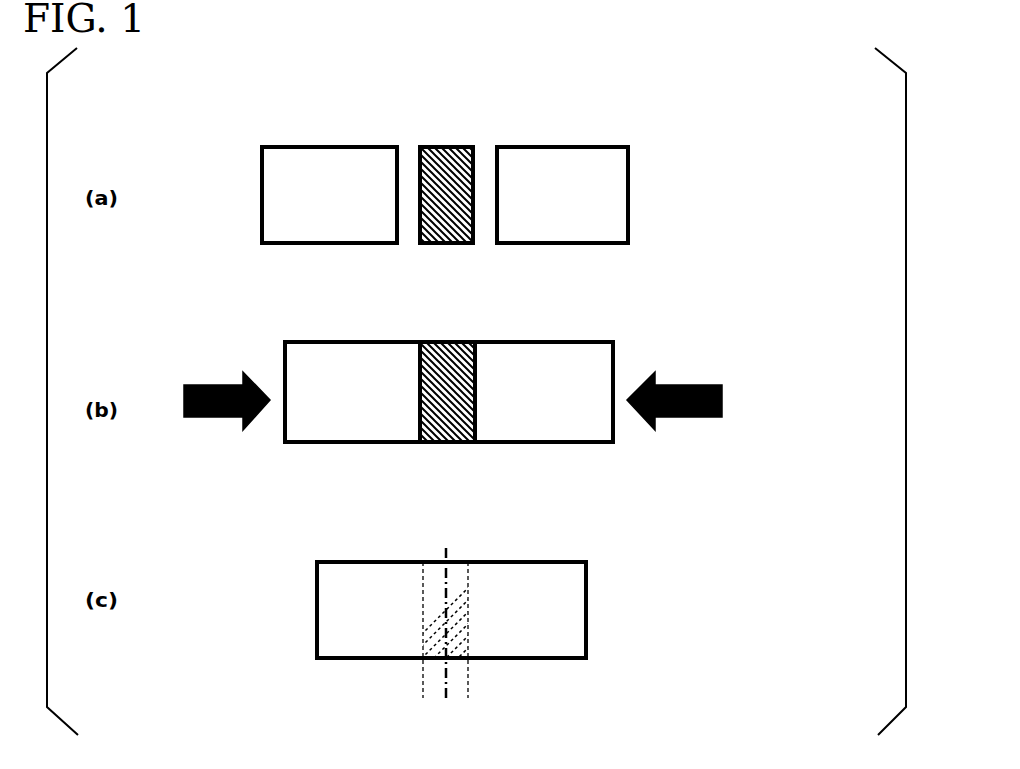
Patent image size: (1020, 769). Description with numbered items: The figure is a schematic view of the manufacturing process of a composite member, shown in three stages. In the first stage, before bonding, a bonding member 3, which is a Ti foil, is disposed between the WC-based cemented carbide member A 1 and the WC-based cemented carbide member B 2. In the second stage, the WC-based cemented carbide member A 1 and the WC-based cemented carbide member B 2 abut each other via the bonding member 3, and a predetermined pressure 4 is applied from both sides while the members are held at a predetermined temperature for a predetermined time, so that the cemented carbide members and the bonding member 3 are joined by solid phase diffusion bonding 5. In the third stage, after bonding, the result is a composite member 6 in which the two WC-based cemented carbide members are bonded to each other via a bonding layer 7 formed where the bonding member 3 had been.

The WC-based cemented carbide member A 1 is at (275, 667).
The WC-based cemented carbide member B 2 is at (653, 140).
The bonding member 3 is at (445, 140).
The pressure 4 is at (446, 423).
The solid phase diffusion bonding 5 is at (447, 462).
The composite member 6 is at (310, 618).
The bonding layer 7 is at (446, 527).